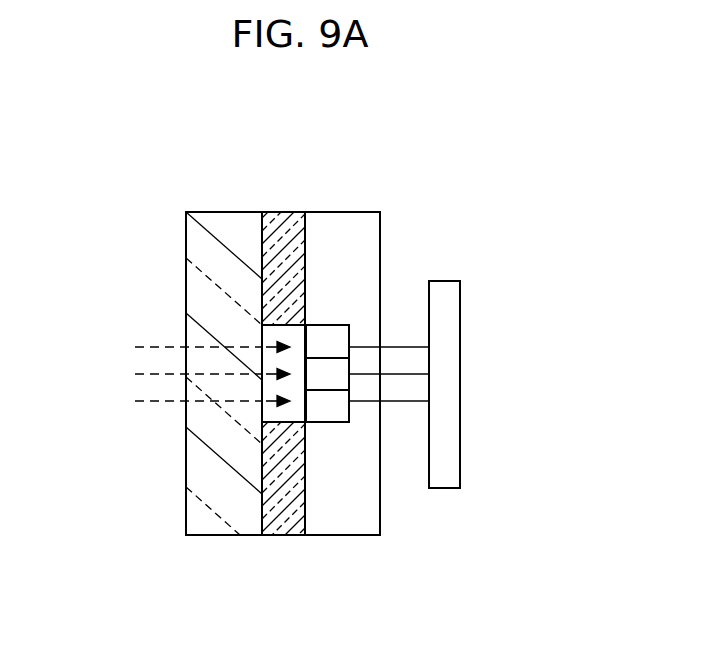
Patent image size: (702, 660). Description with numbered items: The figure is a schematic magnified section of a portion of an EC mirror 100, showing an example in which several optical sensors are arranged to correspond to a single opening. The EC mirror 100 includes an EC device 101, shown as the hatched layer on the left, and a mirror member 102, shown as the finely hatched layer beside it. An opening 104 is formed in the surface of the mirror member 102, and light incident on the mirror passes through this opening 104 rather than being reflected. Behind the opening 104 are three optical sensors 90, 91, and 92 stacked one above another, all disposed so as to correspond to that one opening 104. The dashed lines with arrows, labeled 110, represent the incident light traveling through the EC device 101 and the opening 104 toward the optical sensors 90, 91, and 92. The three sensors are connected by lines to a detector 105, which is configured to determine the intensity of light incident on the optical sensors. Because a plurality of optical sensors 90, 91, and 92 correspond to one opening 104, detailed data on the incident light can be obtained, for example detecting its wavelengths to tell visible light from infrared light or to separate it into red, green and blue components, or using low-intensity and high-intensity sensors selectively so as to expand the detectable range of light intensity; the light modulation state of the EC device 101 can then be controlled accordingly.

The EC mirror 100 is at (125, 167).
The EC device 101 is at (213, 496).
The mirror member 102 is at (283, 217).
The opening 104 is at (290, 333).
The optical sensor 90 is at (343, 337).
The optical sensor 91 is at (336, 378).
The optical sensor 92 is at (328, 418).
The detector 105 is at (452, 383).
The incident light 110 is at (140, 375).